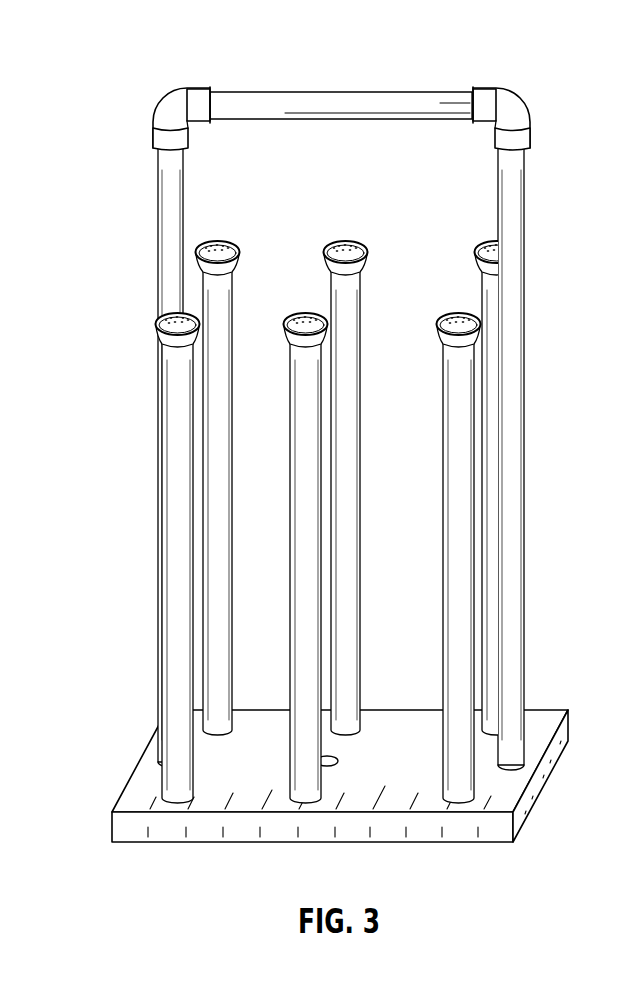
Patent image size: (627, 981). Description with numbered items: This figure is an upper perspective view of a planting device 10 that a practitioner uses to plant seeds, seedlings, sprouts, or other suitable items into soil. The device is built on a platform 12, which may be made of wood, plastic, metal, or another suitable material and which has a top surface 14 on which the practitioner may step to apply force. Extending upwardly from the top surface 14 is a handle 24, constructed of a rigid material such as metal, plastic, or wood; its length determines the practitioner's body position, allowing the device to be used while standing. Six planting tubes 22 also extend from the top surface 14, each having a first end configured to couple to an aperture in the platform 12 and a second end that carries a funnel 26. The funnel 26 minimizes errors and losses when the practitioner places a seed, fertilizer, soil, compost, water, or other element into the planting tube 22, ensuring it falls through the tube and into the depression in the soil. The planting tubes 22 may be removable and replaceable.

The planting device 10 is at (160, 77).
The platform 12 is at (206, 829).
The top surface 14 is at (545, 725).
The planting tube 22 is at (458, 485).
The handle 24 is at (510, 106).
The funnel 26 is at (480, 325).